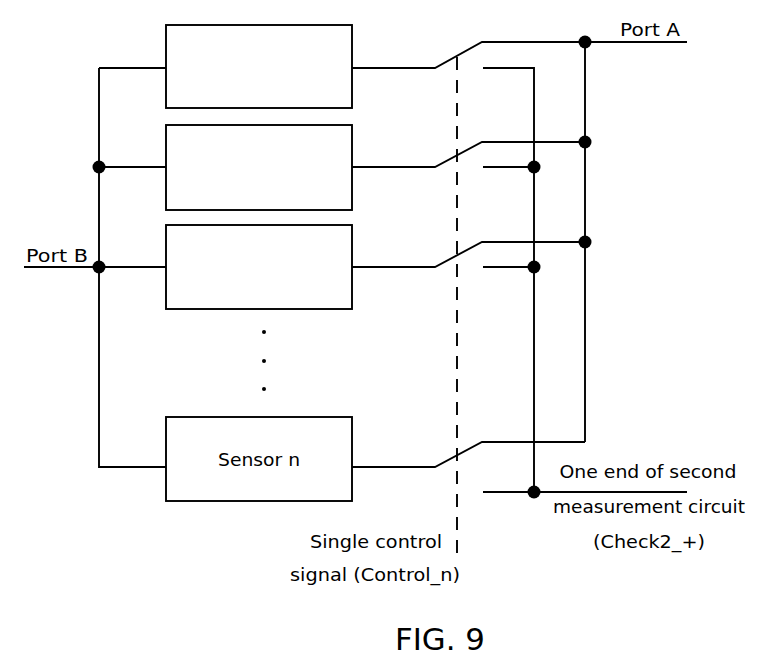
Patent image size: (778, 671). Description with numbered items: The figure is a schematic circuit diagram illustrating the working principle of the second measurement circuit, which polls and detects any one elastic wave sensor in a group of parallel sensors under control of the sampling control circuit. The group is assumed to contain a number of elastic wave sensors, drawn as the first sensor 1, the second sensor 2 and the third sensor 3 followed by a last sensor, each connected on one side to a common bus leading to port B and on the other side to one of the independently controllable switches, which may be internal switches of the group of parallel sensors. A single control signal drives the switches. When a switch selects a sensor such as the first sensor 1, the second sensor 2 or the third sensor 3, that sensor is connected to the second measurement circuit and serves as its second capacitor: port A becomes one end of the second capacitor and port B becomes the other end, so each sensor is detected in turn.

The sensor 1 is at (342, 66).
The sensor 2 is at (342, 167).
The sensor 3 is at (342, 267).